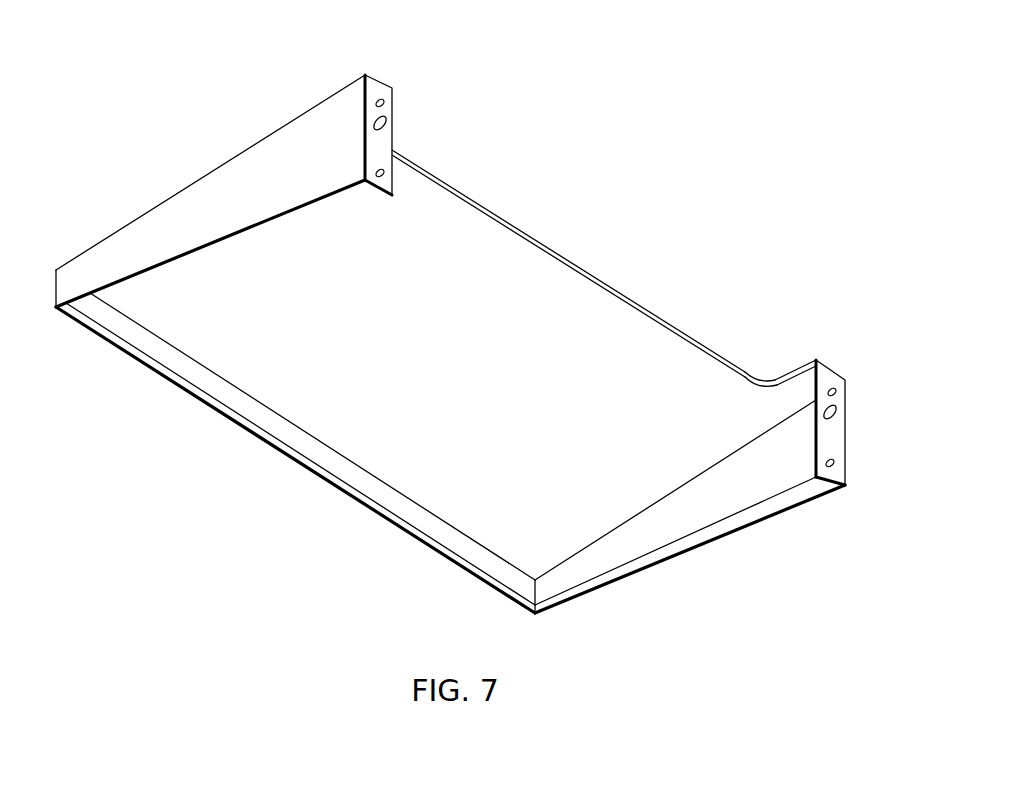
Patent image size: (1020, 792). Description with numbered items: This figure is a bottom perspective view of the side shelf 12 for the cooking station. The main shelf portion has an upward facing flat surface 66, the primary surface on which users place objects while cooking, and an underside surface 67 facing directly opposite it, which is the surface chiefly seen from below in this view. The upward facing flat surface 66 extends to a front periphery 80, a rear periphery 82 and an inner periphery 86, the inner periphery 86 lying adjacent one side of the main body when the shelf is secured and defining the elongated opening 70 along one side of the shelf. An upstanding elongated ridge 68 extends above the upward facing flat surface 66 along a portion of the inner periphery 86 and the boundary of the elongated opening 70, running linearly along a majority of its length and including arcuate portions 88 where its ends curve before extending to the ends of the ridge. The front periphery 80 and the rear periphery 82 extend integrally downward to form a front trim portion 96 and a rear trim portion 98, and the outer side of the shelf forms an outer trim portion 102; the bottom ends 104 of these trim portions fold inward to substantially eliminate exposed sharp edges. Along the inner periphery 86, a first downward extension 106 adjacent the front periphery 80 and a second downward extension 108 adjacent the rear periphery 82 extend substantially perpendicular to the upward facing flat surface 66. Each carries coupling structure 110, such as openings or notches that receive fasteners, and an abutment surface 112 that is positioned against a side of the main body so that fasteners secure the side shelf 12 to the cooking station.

The side shelf 12 is at (136, 144).
The upward facing flat surface 66 is at (203, 168).
The front periphery 80 is at (273, 131).
The rear periphery 82 is at (378, 82).
The first downward extension 106 is at (404, 108).
The abutment surface 112 is at (382, 151).
The front trim portion 96 is at (79, 278).
The underside surface 67 is at (533, 258).
The upstanding elongated ridge 68 is at (628, 280).
The arcuate portions 88 is at (762, 368).
The elongated opening 70 is at (784, 376).
The inner periphery 86 is at (836, 375).
The coupling structure 110 is at (845, 407).
The second downward extension 108 is at (856, 428).
The rear trim portion 98 is at (742, 488).
The bottom ends 104 is at (652, 568).
The outer trim portion 102 is at (201, 373).